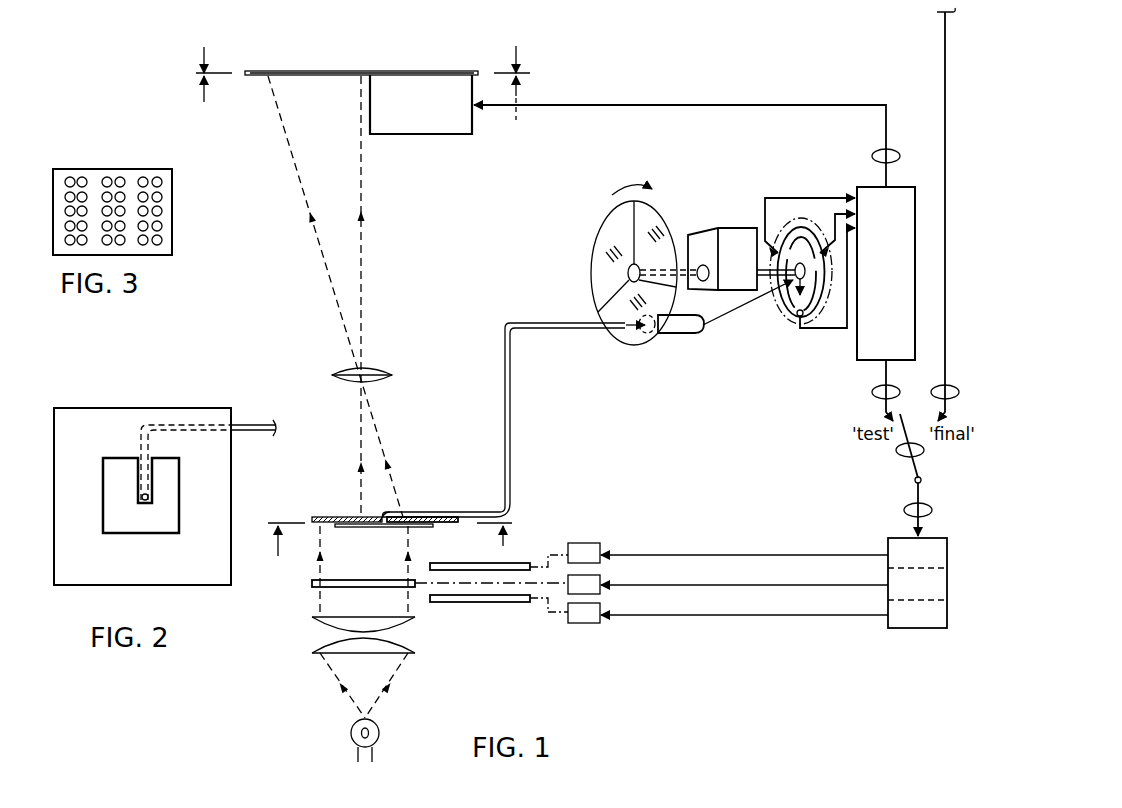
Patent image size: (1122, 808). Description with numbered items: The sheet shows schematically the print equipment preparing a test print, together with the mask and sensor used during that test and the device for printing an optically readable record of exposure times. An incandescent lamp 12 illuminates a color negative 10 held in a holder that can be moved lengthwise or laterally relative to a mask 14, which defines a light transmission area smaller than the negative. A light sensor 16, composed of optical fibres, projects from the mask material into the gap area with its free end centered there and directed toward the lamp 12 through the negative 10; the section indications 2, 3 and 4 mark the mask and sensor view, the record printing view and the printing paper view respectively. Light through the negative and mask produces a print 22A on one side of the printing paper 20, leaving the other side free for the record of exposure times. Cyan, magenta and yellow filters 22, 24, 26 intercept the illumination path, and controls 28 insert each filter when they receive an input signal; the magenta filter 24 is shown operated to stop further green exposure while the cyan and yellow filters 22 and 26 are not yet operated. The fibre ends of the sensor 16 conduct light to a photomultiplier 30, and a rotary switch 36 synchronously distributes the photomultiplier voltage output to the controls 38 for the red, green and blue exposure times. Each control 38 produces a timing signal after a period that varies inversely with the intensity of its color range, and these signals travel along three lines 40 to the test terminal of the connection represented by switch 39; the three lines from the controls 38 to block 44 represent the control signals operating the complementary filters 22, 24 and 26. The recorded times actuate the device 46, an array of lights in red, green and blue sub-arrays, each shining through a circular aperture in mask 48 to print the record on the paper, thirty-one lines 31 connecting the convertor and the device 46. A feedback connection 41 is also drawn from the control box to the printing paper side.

In FIG. 1, the section line 2- 2 is at (393, 552).
In FIG. 1, the section line 3-3 / control line indicator 3 is at (585, 272).
In FIG. 1, the section line 4- 4 is at (360, 110).
In FIG. 1, the negative 10 is at (420, 527).
In FIG. 1, the incandescent lamp 12 is at (380, 735).
In FIG. 1, the mask 14 is at (334, 516).
In FIG. 2, the mask 14 is at (160, 585).
In FIG. 1, the light sensor 16 is at (385, 524).
In FIG. 2, the light sensor 16 is at (148, 505).
In FIG. 1, the printing paper 20 is at (433, 78).
In FIG. 1, the cyan filter 22 is at (530, 563).
In FIG. 1, the print 22A is at (336, 77).
In FIG. 1, the magenta filter 24 is at (355, 580).
In FIG. 1, the yellow filter 26 is at (465, 603).
In FIG. 1, the controls 28 is at (585, 543).
In FIG. 1, the photomultiplier 30 is at (668, 330).
In FIG. 1, the lines 31 is at (899, 157).
In FIG. 1, the rotary switch 36 is at (772, 315).
In FIG. 1, the controls 38 is at (858, 187).
In FIG. 1, the switch 39 is at (903, 472).
In FIG. 1, the lines 40 is at (886, 374).
In FIG. 1, the feedback line 41 is at (752, 104).
In FIG. 1, the block 44 is at (912, 630).
In FIG. 1, the device 46 is at (400, 135).
In FIG. 3, the device 46 is at (172, 185).
In FIG. 3, the mask 48 is at (101, 178).